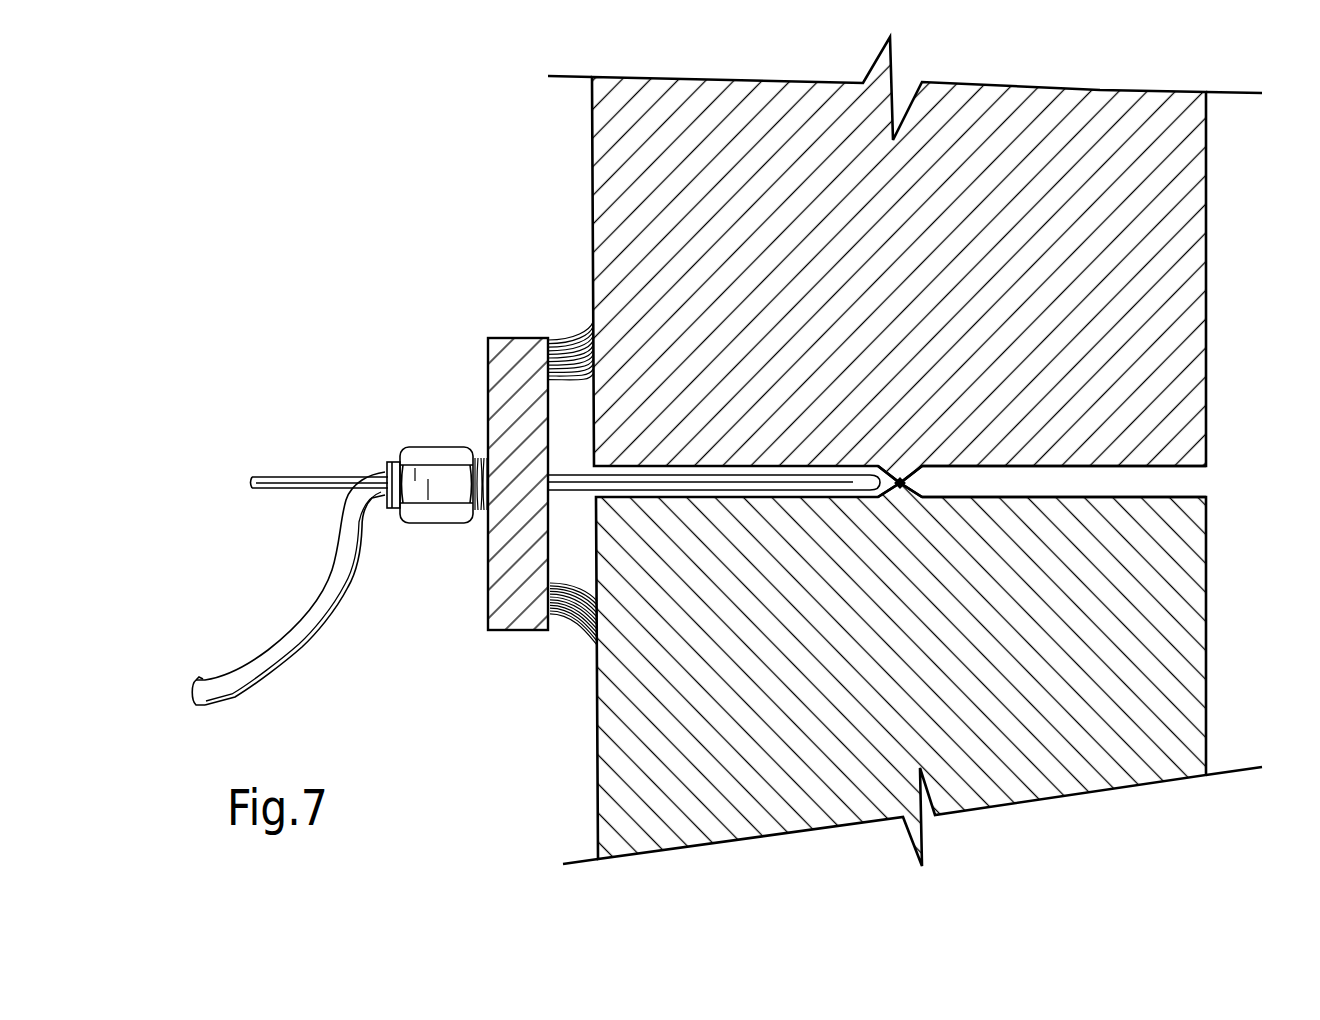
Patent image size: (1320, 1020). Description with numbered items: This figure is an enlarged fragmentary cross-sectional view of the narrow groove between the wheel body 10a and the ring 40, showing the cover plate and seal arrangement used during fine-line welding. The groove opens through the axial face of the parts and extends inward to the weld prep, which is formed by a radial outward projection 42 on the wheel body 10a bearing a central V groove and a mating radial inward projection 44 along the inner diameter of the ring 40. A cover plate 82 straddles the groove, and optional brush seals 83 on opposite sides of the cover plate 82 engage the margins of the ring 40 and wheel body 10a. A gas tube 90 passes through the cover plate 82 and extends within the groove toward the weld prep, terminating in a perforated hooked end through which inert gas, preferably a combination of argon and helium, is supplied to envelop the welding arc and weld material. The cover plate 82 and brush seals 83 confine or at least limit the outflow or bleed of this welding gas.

The wheel body 10a is at (637, 780).
The ring 40 is at (610, 218).
The radial outward projection 42 is at (908, 492).
The radial inward projection 44 is at (906, 474).
The cover plate 82 is at (492, 592).
The brush seals 83 is at (568, 344).
The gas tube 90 is at (305, 642).